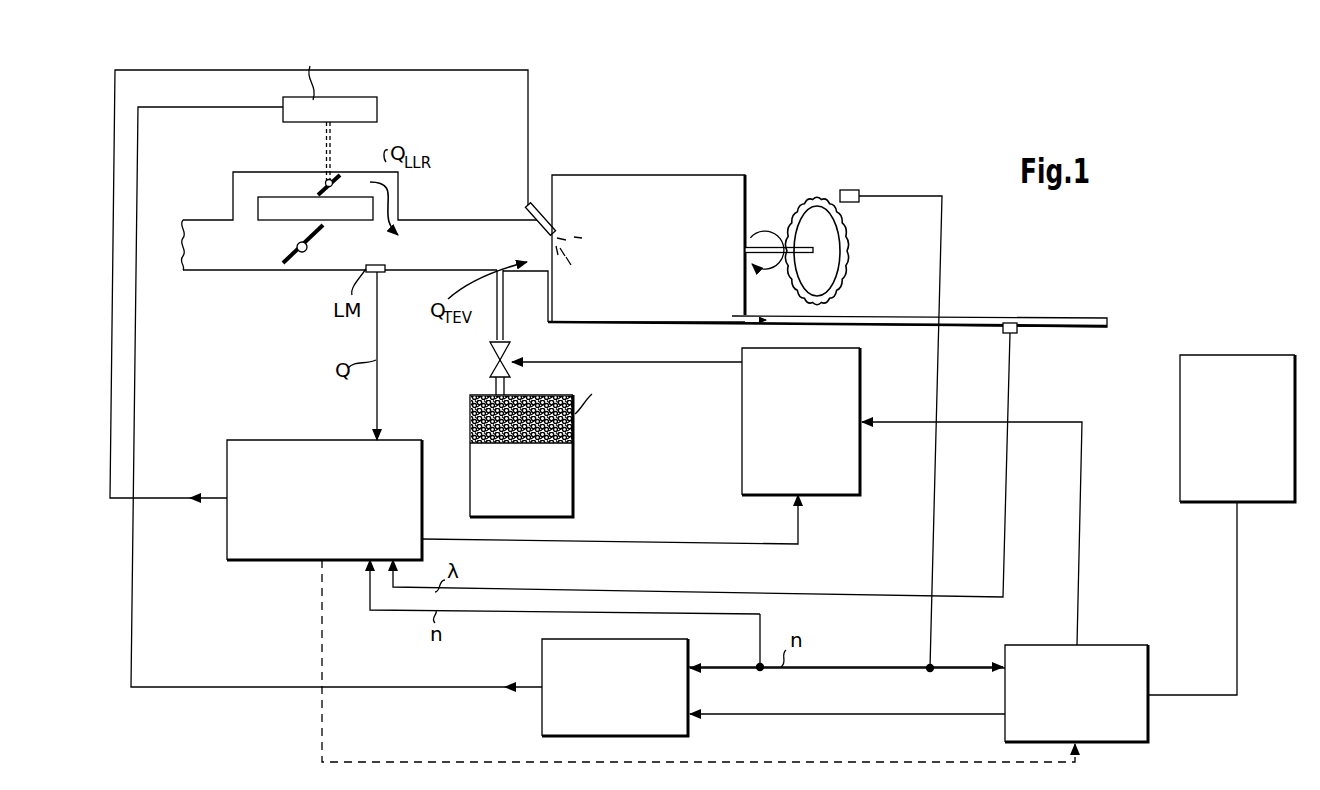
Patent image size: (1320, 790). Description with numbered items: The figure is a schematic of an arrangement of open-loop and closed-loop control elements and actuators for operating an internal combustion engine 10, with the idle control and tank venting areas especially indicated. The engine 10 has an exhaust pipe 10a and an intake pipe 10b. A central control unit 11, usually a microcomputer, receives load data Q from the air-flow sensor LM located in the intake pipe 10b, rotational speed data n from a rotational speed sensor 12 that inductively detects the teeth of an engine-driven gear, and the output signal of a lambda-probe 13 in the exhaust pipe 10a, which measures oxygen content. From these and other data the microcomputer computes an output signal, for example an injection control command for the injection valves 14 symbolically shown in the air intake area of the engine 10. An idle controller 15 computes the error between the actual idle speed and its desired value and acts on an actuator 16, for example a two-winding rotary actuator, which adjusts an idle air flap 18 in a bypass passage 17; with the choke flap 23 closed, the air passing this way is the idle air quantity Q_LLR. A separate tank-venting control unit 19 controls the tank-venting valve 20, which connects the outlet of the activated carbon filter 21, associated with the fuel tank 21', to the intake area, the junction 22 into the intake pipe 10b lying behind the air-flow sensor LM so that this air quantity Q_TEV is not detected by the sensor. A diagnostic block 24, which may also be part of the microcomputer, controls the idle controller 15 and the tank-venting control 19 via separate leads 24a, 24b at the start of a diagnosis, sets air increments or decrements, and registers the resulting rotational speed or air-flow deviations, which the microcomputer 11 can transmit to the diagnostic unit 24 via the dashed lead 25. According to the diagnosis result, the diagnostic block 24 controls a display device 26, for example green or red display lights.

The internal combustion engine 10 is at (712, 190).
The exhaust pipe 10a is at (963, 322).
The intake pipe 10b is at (314, 262).
The central control unit 11 is at (275, 546).
The rotational speed sensor 12 is at (850, 190).
The lambda-probe 13 is at (1010, 334).
The injection valves 14 is at (534, 209).
The idle controller 15 is at (550, 717).
The actuator 16 is at (369, 112).
The bypass passage 17 is at (263, 181).
The idle air flap 18 is at (322, 183).
The tank-venting control unit 19 is at (752, 380).
The tank-venting valve 20 is at (490, 352).
The activated carbon filter 21 is at (557, 420).
The fuel tank 21' is at (549, 456).
The junction 22 is at (513, 282).
The choke flap 23 is at (275, 250).
The diagnostic block 24 is at (1137, 726).
The lead 24a is at (1078, 584).
The lead 24b is at (868, 714).
The lead 25 is at (782, 762).
The display device 26 is at (1186, 377).